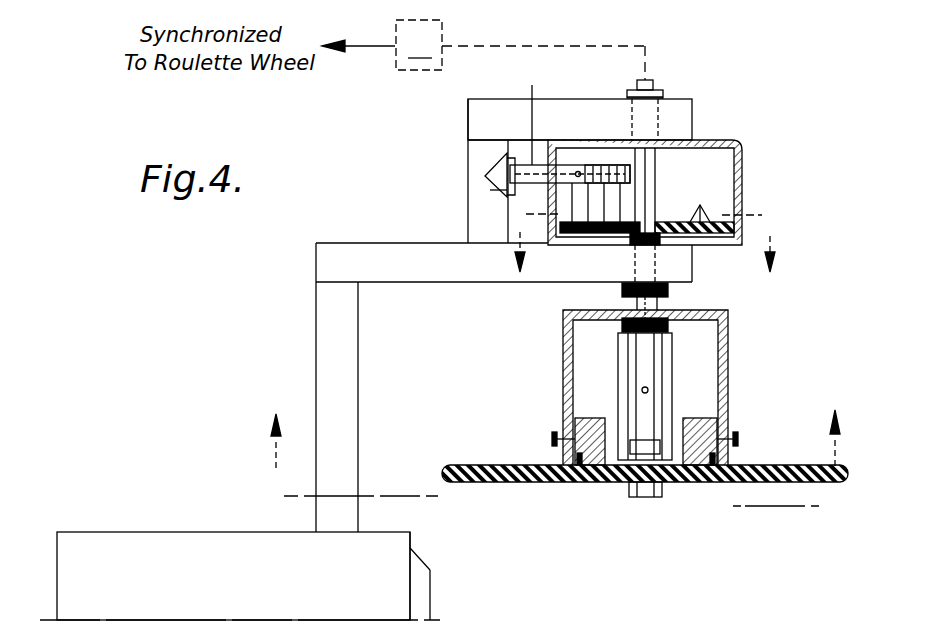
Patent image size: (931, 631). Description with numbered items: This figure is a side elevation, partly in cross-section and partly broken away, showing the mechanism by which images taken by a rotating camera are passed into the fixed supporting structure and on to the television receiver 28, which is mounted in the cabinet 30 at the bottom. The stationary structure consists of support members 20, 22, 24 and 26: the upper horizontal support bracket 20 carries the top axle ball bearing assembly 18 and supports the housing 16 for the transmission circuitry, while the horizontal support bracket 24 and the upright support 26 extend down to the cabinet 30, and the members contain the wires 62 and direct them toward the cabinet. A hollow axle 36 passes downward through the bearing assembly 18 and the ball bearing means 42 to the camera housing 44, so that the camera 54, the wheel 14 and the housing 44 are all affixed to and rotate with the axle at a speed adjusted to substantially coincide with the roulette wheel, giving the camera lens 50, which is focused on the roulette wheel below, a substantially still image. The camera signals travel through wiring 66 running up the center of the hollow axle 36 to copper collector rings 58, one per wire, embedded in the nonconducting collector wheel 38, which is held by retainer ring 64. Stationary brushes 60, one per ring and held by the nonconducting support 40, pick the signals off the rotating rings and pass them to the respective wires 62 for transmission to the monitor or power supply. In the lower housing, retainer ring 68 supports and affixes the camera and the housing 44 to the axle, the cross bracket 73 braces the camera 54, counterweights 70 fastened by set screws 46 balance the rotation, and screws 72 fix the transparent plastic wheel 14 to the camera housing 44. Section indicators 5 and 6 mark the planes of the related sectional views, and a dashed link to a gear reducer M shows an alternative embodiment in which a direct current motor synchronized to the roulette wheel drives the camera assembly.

The wheel 14 is at (440, 22).
The housing 16 is at (742, 158).
The top axle ball bearing assembly 18 is at (660, 92).
The upper horizontal support bracket 20 is at (578, 112).
The support member 22 is at (482, 152).
The horizontal support bracket 24 is at (402, 262).
The support member 26 is at (336, 350).
The television receiver 28 is at (420, 594).
The cabinet 30 is at (200, 552).
The axle 36 is at (656, 84).
The collector wheel 38 is at (712, 222).
The nonconducting support 40 is at (568, 124).
The ball bearing means 42 is at (622, 290).
The camera housing 44 is at (728, 376).
The set screws 46 is at (552, 438).
The camera lens 50 is at (646, 498).
The camera 54 is at (630, 380).
The collector rings 58 is at (703, 201).
The stationary brushes 60 is at (622, 165).
The wire 62 is at (496, 174).
The retainer ring 64 is at (662, 242).
The wiring 66 is at (672, 288).
The retainer ring 68 is at (665, 330).
The counterweights 70 is at (697, 418).
The screws 72 is at (578, 482).
The cross bracket 73 is at (618, 468).
The section line 5- 5 is at (643, 237).
The section line 6- 6 is at (551, 466).